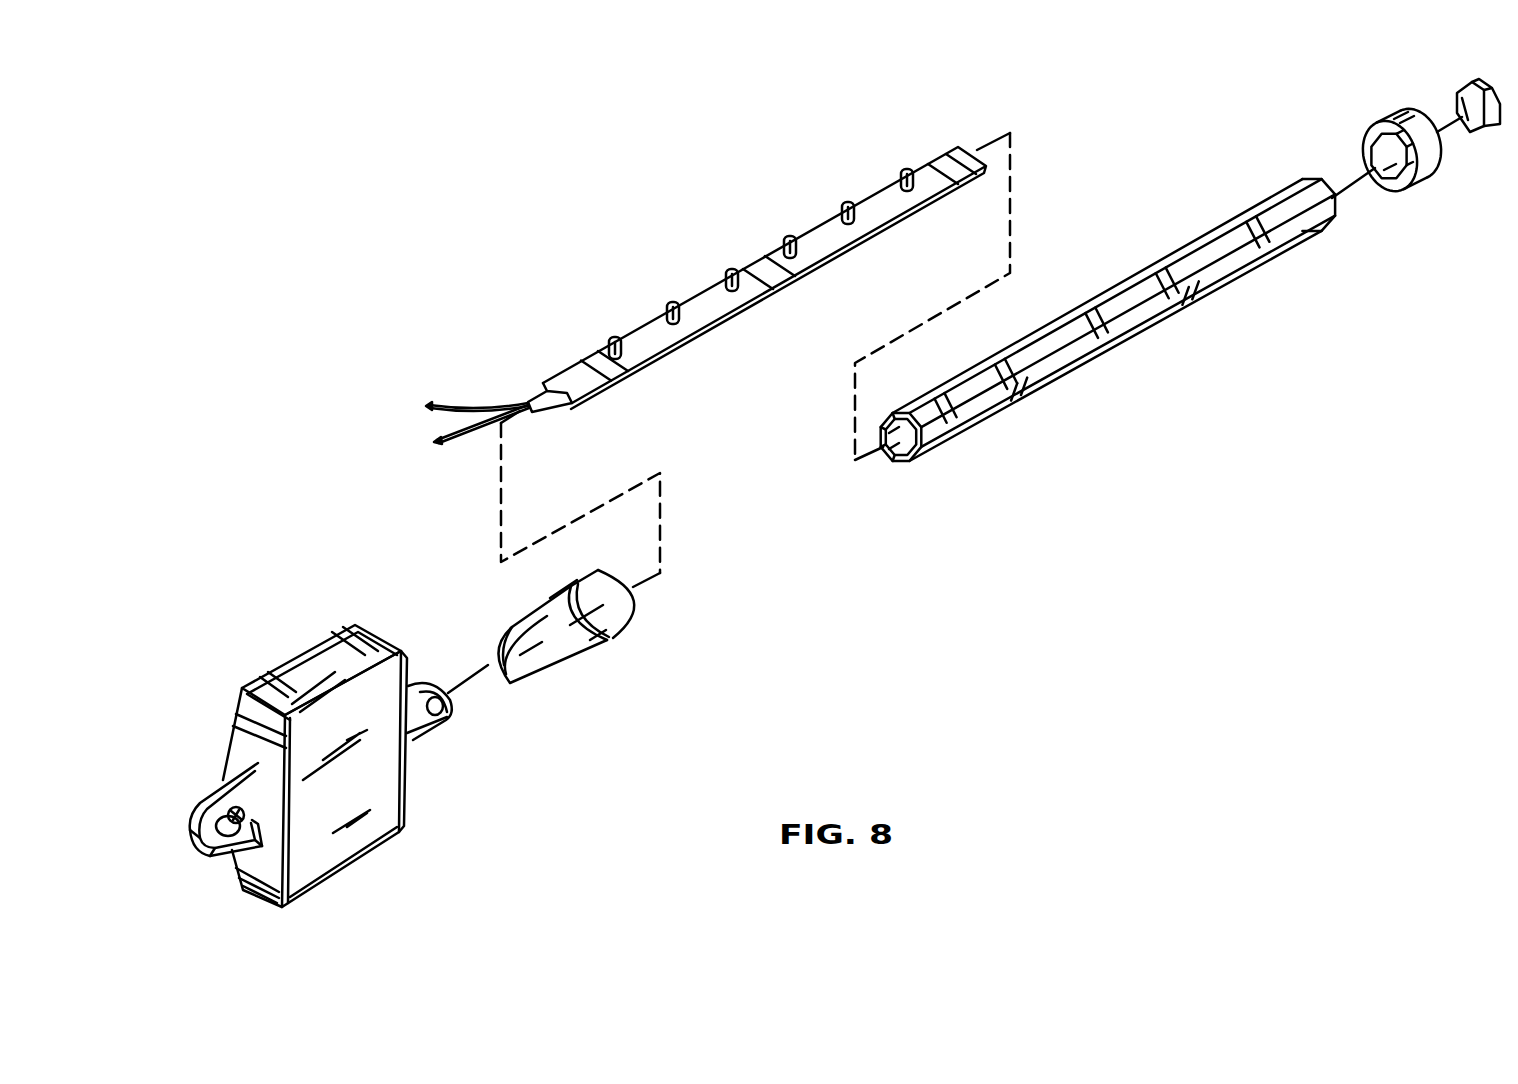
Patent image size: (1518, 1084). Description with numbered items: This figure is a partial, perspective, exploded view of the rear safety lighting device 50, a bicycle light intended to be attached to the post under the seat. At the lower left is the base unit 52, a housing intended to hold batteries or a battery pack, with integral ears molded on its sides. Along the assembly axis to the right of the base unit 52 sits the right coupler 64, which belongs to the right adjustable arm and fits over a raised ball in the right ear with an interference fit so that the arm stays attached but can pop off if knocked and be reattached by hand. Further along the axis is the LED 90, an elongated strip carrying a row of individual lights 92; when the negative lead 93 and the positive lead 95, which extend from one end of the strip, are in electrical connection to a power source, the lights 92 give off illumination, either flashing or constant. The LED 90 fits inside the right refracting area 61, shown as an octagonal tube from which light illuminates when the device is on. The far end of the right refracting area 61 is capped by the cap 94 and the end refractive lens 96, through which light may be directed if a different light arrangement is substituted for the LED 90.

The rear safety lighting device 50 is at (259, 605).
The base unit 52 is at (407, 823).
The right refracting area 61 is at (1109, 318).
The right coupler 64 is at (582, 643).
The LED 90 is at (703, 300).
The lights 92 is at (613, 338).
The negative lead 93 is at (464, 405).
The cap 94 is at (1427, 177).
The positive lead 95 is at (457, 438).
The end refractive lens 96 is at (1480, 127).